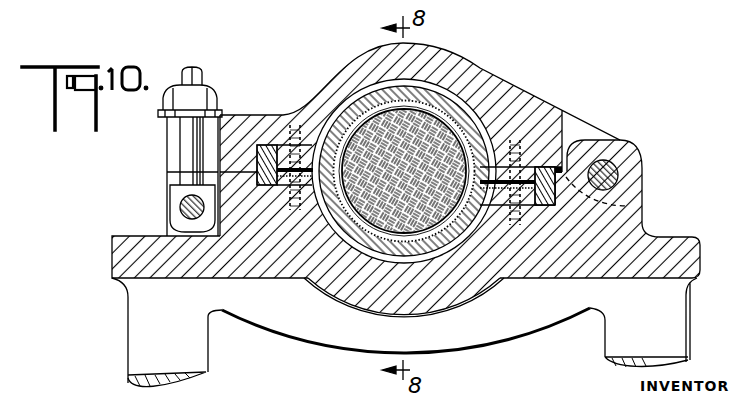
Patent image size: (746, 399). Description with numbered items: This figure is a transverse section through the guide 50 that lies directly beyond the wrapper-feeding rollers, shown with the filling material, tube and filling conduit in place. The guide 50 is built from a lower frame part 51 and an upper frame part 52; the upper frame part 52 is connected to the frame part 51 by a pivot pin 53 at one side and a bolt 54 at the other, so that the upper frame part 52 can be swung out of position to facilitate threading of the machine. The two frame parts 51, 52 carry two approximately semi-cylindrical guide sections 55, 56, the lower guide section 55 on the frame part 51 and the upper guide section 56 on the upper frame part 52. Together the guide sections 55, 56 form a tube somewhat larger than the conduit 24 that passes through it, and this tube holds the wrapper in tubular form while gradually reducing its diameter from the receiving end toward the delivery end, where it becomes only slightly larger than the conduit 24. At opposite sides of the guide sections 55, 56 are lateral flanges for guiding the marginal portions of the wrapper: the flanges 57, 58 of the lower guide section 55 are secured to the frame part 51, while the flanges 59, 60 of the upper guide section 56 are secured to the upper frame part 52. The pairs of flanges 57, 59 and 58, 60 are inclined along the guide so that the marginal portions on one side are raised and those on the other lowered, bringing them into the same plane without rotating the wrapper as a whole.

The conduit 24 is at (427, 110).
The guide 50 is at (128, 236).
The frame part 51 is at (670, 236).
The upper frame part 52 is at (530, 96).
The pivot pin 53 is at (613, 173).
The bolt 54 is at (186, 145).
The lower guide section 55 is at (340, 255).
The upper guide section 56 is at (362, 100).
The flange 57 is at (282, 188).
The flange 58 is at (528, 205).
The flange 59 is at (283, 128).
The flange 60 is at (532, 172).